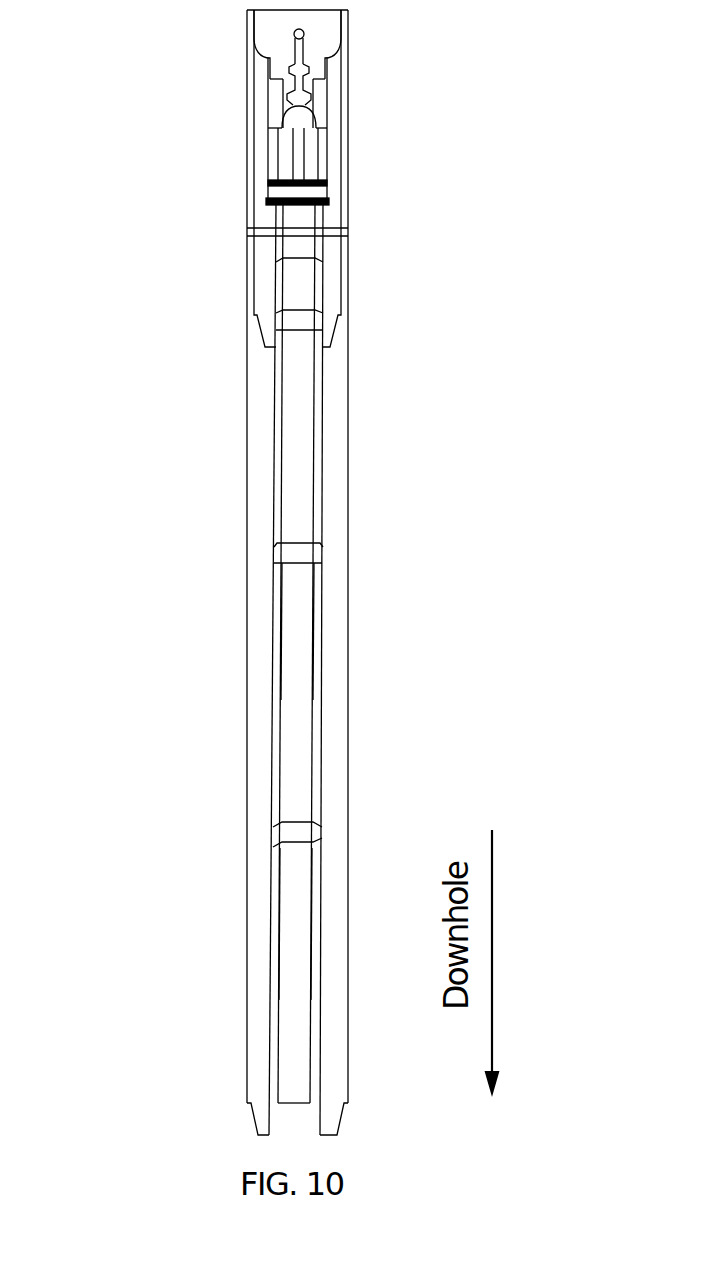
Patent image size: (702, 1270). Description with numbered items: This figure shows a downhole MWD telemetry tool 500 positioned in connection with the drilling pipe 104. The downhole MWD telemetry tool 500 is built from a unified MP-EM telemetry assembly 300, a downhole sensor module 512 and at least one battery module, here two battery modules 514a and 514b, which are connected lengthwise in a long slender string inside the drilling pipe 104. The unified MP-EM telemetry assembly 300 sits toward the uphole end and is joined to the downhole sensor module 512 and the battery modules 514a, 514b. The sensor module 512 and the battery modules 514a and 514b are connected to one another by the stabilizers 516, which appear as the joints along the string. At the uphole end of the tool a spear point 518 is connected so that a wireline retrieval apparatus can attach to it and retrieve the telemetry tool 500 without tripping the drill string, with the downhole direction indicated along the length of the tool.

The downhole MWD telemetry tool 500 is at (420, 110).
The drilling pipe 104 is at (337, 397).
The unified MP-EM telemetry assembly 300 is at (245, 255).
The spear point 518 is at (283, 58).
The downhole sensor module 512 is at (287, 457).
The battery module 514a is at (288, 678).
The battery module 514b is at (290, 938).
The stabilizers 516 is at (297, 340).